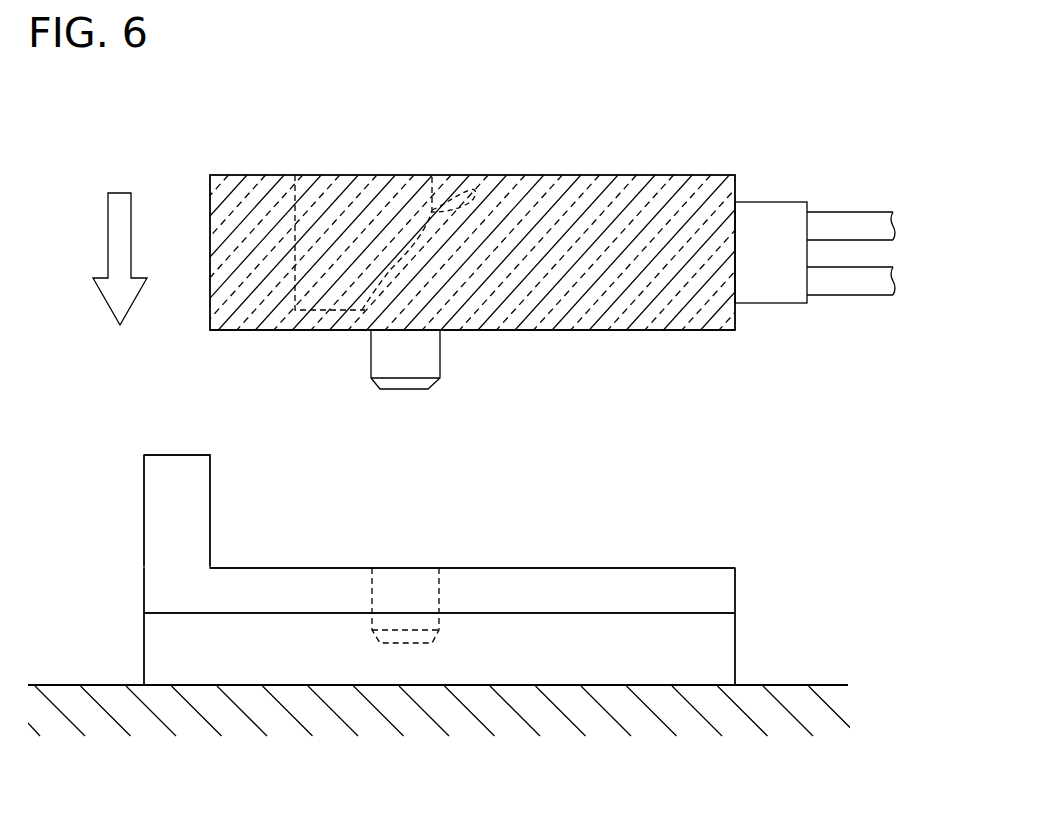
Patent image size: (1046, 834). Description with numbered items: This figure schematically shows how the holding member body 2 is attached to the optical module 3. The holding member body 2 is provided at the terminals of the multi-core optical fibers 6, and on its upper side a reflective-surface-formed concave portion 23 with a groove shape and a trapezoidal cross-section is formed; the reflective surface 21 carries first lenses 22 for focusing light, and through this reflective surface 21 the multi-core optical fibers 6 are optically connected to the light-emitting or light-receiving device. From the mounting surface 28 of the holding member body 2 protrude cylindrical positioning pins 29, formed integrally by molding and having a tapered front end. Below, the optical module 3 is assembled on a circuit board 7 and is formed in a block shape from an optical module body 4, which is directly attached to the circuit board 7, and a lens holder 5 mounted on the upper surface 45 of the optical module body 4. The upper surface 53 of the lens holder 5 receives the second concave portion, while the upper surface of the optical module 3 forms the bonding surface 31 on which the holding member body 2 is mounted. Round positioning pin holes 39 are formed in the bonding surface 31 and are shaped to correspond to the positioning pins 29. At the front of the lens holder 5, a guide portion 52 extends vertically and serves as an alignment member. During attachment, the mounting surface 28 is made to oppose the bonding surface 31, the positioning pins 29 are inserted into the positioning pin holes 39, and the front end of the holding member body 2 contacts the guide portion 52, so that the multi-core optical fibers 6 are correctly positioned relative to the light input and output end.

The holding member body 2 is at (667, 190).
The multi-core optical fibers 6 is at (842, 222).
The reflective surface 21 is at (467, 195).
The first lenses 22 is at (433, 210).
The reflective-surface-formed concave portion 23 is at (362, 210).
The mounting surface 28 is at (652, 333).
The positioning pin 29 is at (423, 358).
The optical module 3 is at (58, 579).
The optical module body 4 is at (174, 645).
The lens holder 5 is at (172, 546).
The guide portion 52 is at (166, 482).
The positioning pin hole 39 is at (437, 587).
The bonding surface 31 is at (640, 568).
The upper surface 45 is at (702, 613).
The upper surface 53 is at (683, 613).
The circuit board 7 is at (805, 710).